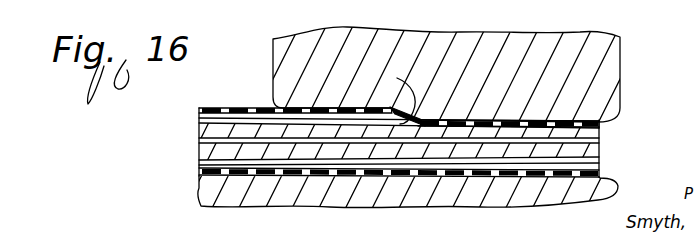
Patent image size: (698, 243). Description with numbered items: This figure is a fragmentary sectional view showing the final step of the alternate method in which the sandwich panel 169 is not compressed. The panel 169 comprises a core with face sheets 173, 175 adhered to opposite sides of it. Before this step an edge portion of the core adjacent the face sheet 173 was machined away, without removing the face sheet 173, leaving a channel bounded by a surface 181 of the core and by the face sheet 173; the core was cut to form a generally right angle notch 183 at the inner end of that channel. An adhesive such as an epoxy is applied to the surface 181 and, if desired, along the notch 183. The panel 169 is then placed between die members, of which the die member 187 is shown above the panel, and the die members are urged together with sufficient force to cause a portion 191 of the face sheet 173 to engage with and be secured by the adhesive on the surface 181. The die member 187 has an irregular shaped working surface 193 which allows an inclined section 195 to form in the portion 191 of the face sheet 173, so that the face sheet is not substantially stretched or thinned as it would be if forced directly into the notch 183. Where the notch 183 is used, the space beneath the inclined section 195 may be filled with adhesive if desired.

The sandwich panel 169 is at (195, 140).
The face sheet 173 is at (248, 107).
The face sheet 175 is at (217, 203).
The surface 181 is at (468, 120).
The notch 183 is at (390, 116).
The die member 187 is at (603, 82).
The portion 191 is at (600, 126).
The working surface 193 is at (428, 101).
The inclined section 195 is at (397, 78).